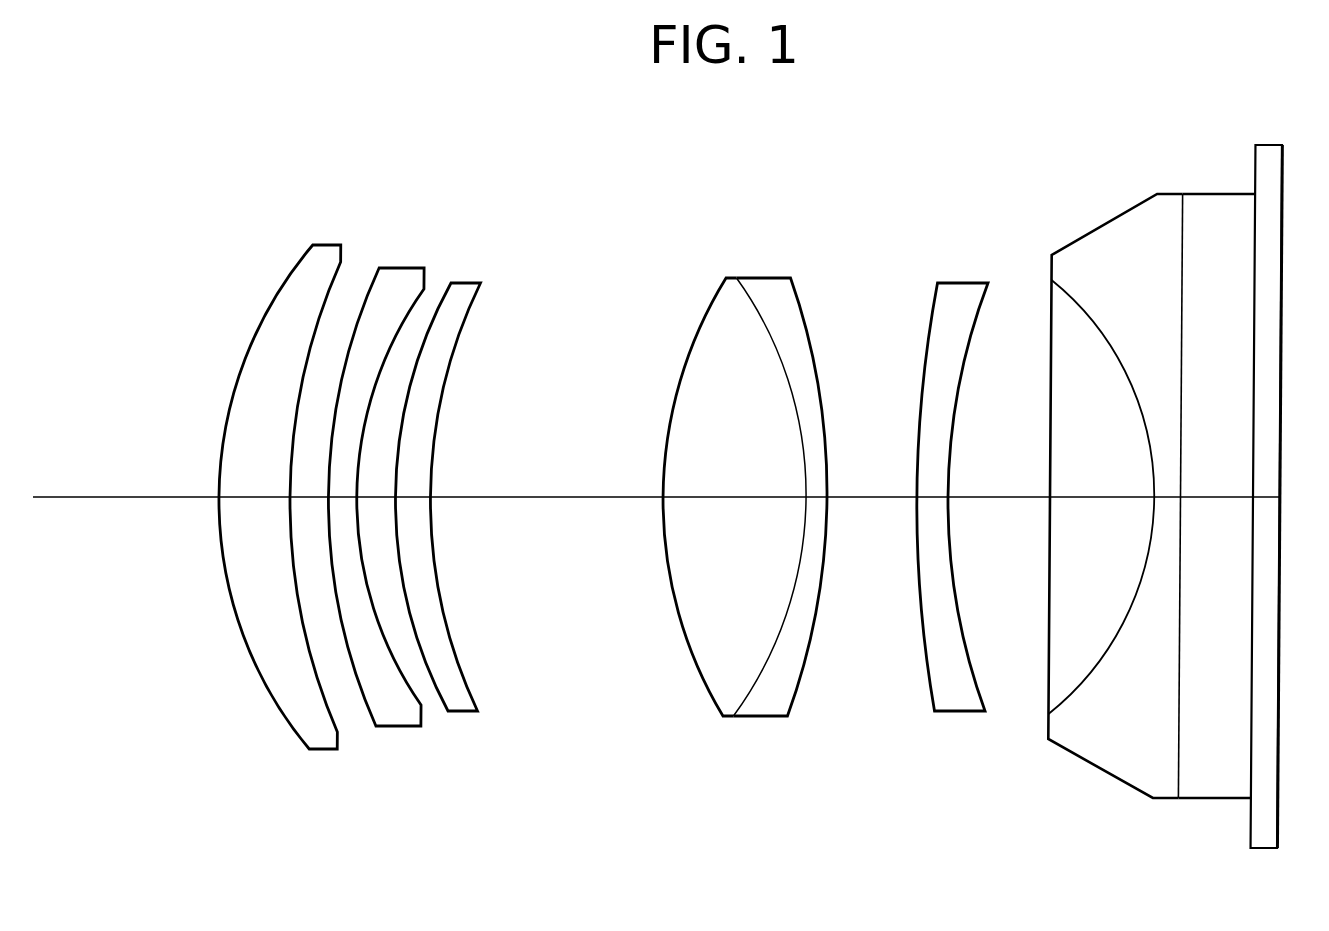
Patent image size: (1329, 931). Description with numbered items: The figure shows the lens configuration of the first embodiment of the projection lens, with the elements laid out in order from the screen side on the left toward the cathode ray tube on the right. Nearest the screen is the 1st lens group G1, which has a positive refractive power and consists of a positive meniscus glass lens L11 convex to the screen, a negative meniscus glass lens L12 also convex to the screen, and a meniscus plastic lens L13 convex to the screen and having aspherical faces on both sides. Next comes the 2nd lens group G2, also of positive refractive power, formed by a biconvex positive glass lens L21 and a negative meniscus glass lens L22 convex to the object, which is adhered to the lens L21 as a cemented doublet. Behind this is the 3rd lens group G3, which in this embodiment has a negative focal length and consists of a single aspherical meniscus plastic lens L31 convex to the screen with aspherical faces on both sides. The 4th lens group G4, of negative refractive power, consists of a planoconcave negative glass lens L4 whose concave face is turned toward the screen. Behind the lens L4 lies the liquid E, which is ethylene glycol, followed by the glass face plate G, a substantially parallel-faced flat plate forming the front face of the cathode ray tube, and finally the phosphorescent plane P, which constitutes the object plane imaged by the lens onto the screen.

The 1st lens group G1 is at (531, 183).
The positive meniscus glass lens L11 is at (305, 252).
The negative meniscus glass lens L12 is at (402, 265).
The meniscus plastic lens L13 is at (471, 280).
The 2nd lens group G2 is at (828, 203).
The biconvex positive glass lens L21 is at (721, 278).
The negative meniscus glass lens L22 is at (795, 262).
The 3rd lens group G3 is at (993, 203).
The aspherical meniscus plastic lens L31 is at (962, 282).
The 4th lens group G4 is at (1140, 163).
The planoconcave negative glass lens L4 is at (1098, 226).
The liquid (ethylene glycol) E is at (1216, 479).
The glass face plate G is at (1267, 476).
The phosphorescent plane P is at (1299, 490).